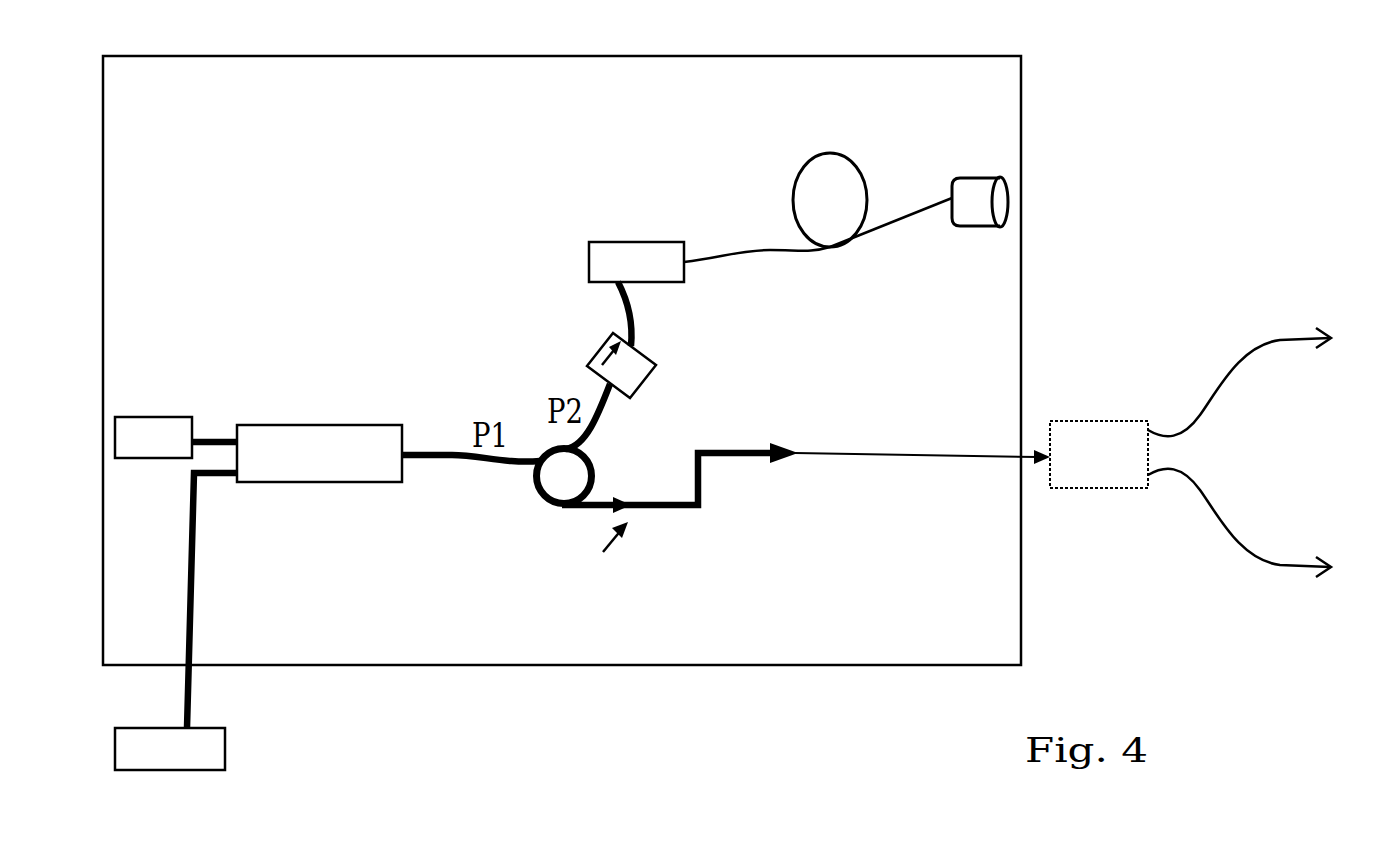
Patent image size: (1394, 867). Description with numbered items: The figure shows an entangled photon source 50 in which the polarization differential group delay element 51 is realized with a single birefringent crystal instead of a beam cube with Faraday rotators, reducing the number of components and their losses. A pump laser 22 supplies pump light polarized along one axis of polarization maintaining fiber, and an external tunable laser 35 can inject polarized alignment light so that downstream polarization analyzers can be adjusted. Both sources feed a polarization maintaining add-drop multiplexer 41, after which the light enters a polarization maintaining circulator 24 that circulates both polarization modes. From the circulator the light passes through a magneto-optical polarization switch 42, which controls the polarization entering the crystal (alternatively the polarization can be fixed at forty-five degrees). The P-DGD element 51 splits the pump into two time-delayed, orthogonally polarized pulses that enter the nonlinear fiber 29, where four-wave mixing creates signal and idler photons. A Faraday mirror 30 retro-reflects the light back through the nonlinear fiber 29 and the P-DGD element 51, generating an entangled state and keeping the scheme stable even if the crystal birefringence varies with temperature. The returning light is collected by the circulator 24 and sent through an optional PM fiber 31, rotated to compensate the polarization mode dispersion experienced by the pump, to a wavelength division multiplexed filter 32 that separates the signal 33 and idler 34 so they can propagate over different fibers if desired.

The entangled photon source 50 is at (562, 344).
The tunable laser 35 is at (153, 439).
The PM add-drop multiplexer 41 is at (319, 456).
The pump laser 22 is at (176, 646).
The PM circulator 24 is at (549, 495).
The polarization switch 42 is at (599, 356).
The P-DGD element 51 is at (630, 274).
The nonlinear fiber 29 is at (818, 179).
The Faraday mirror 30 is at (971, 214).
The PM fiber 31 is at (662, 538).
The WDM filter 32 is at (1099, 435).
The signal 33 is at (1228, 363).
The idler 34 is at (1234, 548).